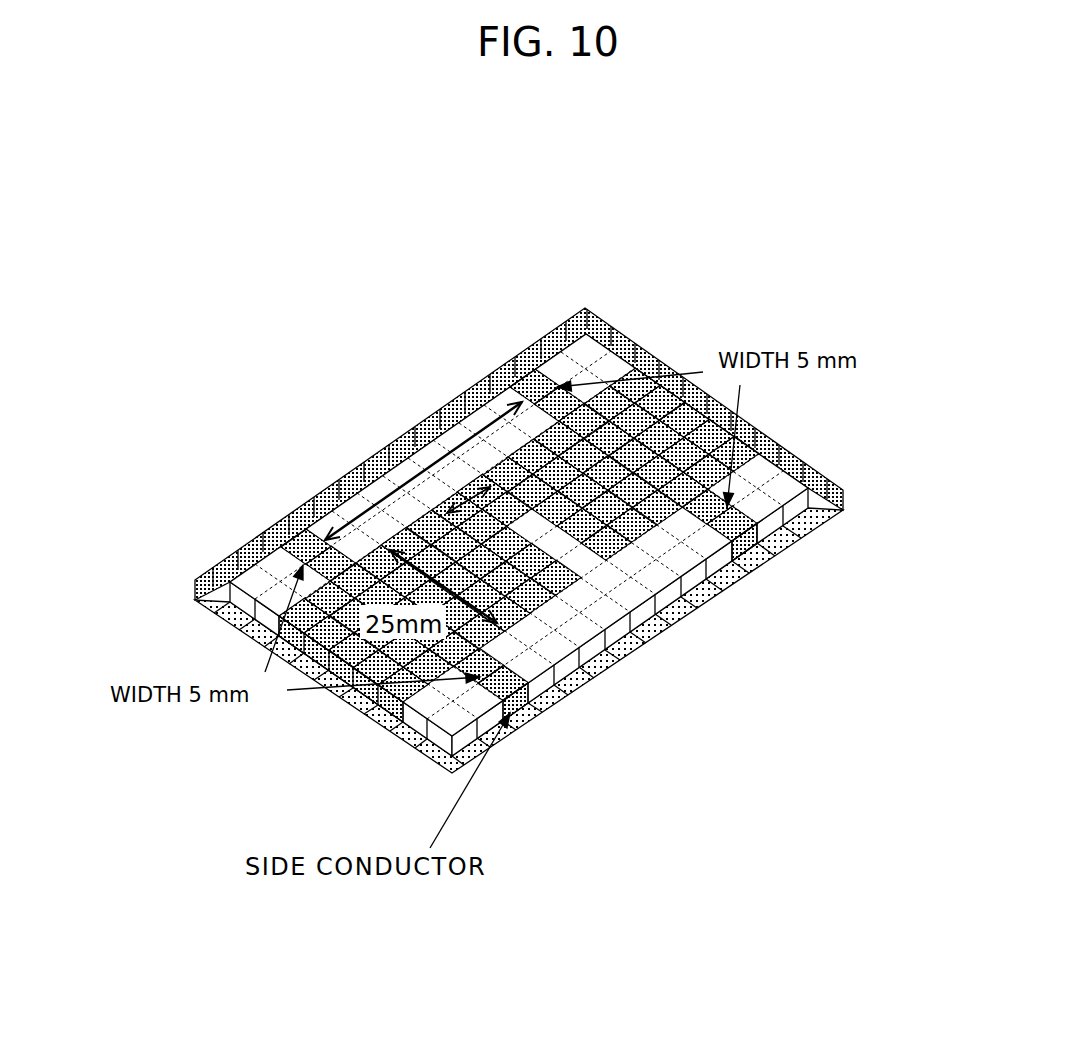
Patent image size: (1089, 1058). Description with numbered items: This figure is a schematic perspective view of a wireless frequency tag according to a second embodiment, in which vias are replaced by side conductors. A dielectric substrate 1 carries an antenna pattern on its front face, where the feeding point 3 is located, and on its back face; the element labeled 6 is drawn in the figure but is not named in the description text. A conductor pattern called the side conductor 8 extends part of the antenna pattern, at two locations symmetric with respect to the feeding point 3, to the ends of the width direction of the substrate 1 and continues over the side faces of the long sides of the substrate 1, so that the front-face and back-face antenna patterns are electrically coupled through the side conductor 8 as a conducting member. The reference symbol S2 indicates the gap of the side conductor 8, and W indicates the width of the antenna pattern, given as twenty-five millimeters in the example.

The substrate 1 is at (547, 655).
The feeding point 3 is at (513, 543).
The dielectric board 6 is at (789, 466).
The side conductor 8 is at (755, 552).
The gap of the side conductor S2 is at (405, 486).
The width of the antenna pattern W is at (457, 581).